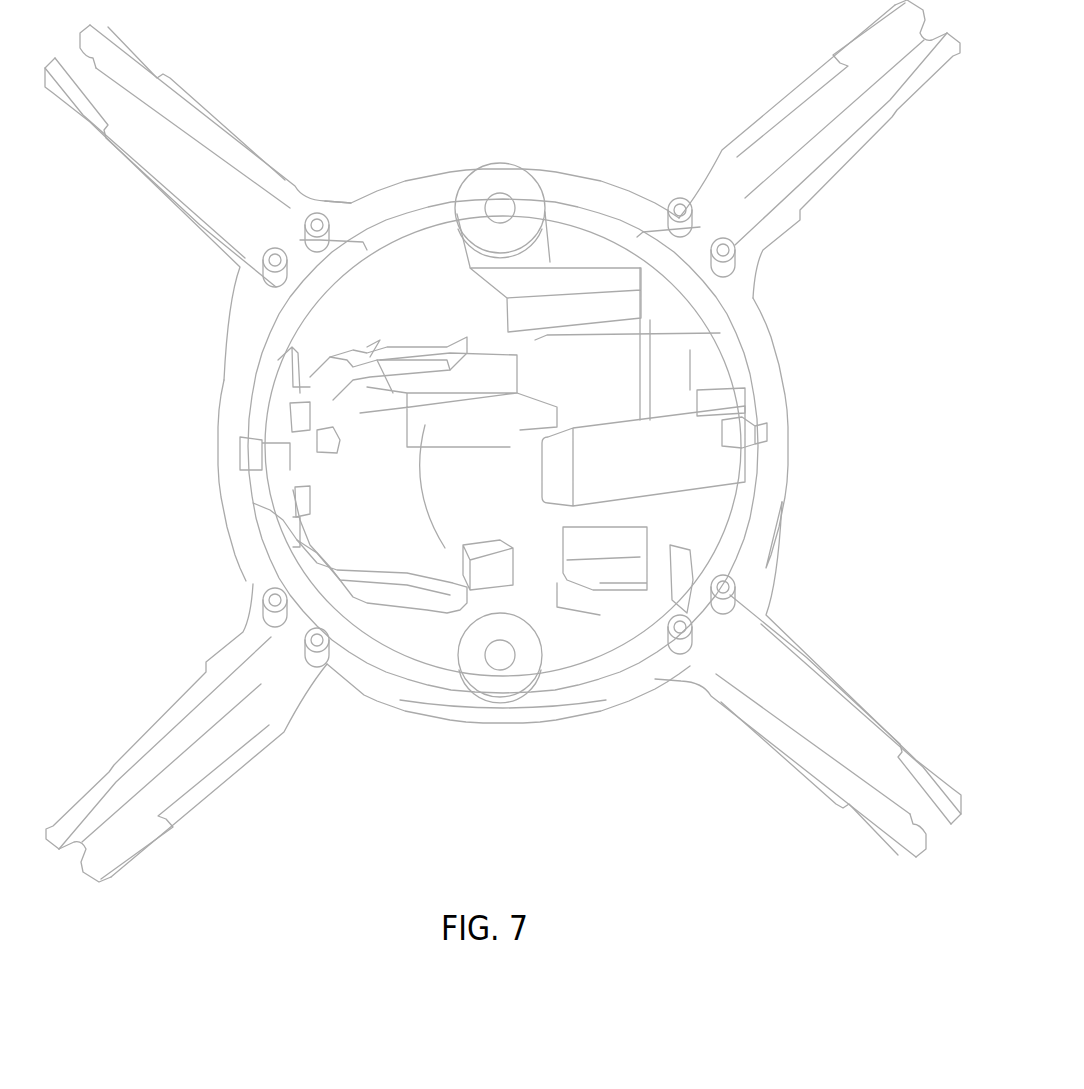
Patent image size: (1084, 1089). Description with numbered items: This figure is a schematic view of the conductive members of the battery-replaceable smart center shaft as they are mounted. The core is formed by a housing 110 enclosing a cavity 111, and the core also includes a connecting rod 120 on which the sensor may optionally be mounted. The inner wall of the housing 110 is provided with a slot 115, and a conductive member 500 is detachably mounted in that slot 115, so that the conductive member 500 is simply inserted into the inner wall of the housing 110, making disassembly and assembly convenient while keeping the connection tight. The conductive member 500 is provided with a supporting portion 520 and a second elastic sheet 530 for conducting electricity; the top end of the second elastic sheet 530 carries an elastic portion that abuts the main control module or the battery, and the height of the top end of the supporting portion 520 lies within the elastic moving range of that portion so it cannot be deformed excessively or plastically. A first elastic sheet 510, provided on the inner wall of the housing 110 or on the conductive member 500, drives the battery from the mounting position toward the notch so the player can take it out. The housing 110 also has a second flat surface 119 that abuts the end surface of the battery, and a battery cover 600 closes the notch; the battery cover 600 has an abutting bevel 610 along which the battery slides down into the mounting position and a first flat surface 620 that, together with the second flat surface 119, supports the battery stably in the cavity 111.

The housing 110 is at (214, 121).
The cavity 111 is at (345, 319).
The slot 115 is at (273, 522).
The second flat surface 119 is at (485, 583).
The connecting rod 120 is at (418, 191).
The conductive member 500 is at (358, 578).
The first elastic sheet 510 is at (642, 478).
The supporting portion 520 is at (297, 412).
The second elastic sheet 530 is at (320, 454).
The battery cover 600 is at (627, 688).
The abutting bevel 610 is at (593, 543).
The first flat surface 620 is at (652, 543).